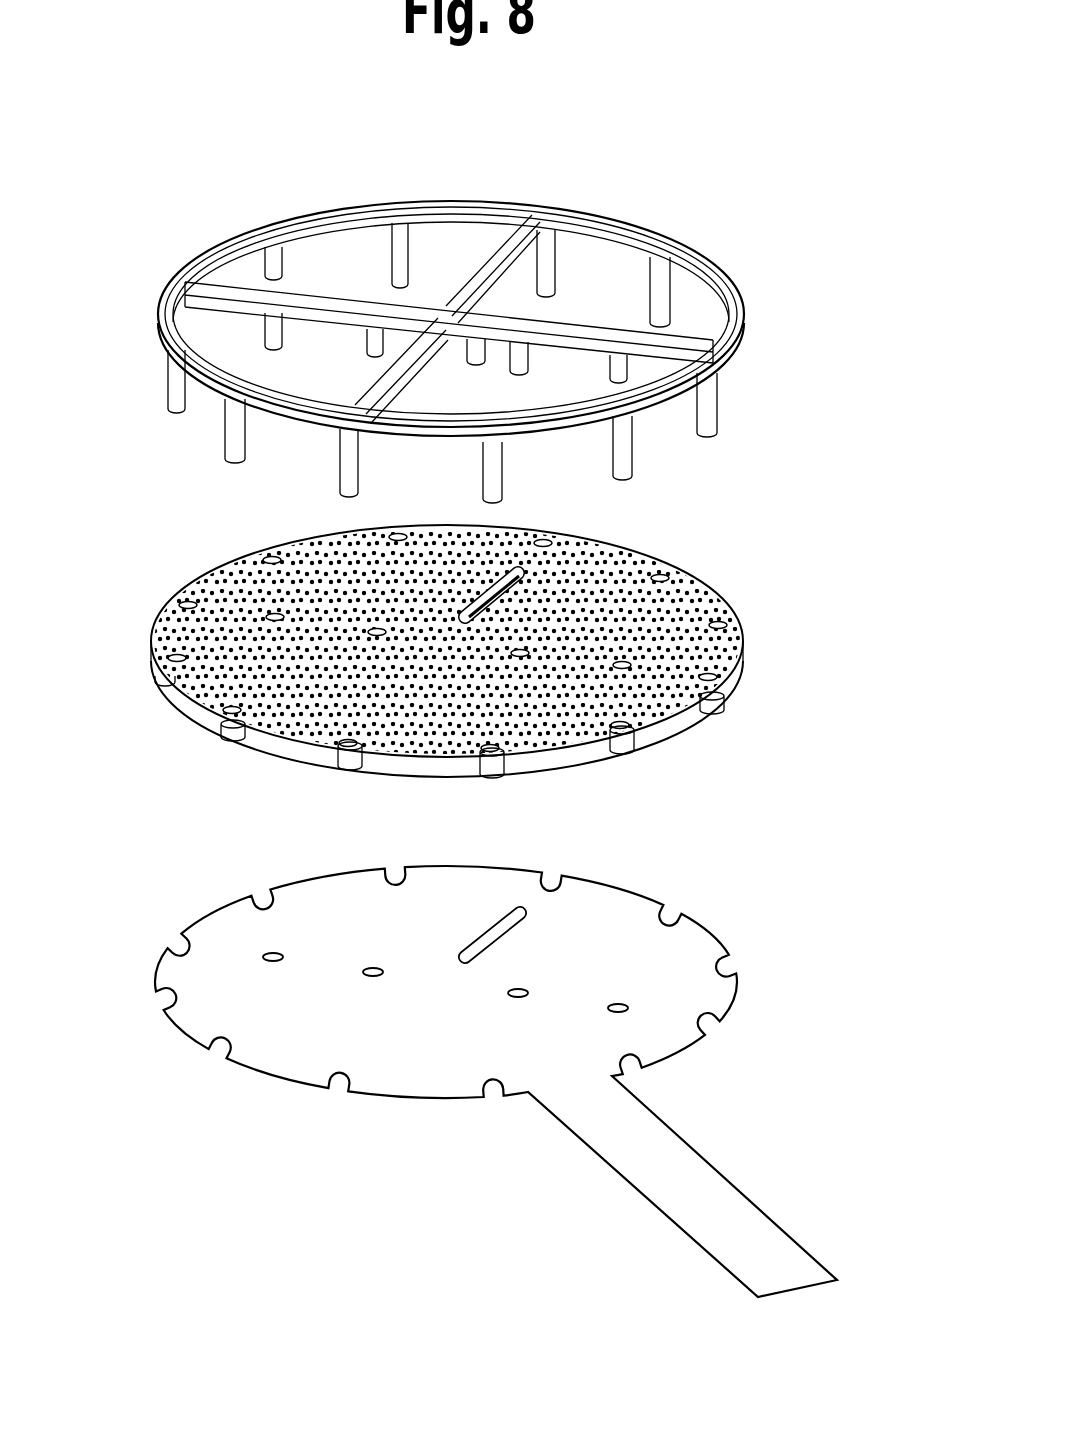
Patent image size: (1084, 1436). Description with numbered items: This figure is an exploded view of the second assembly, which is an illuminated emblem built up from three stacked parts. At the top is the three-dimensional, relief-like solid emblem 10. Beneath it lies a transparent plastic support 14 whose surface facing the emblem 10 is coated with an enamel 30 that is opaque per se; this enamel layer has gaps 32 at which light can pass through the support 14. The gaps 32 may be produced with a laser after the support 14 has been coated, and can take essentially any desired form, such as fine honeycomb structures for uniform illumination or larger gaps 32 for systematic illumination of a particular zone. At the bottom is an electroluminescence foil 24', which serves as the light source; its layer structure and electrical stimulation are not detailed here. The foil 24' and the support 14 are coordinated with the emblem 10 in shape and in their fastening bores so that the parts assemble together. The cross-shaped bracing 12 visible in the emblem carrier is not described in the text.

The solid emblem 10 is at (640, 205).
The cross brace 12 is at (480, 258).
The transparent plastic support 14 is at (162, 722).
The enamel 30 is at (698, 598).
The gaps 32 is at (712, 673).
The electroluminescence foil 24' is at (545, 1081).